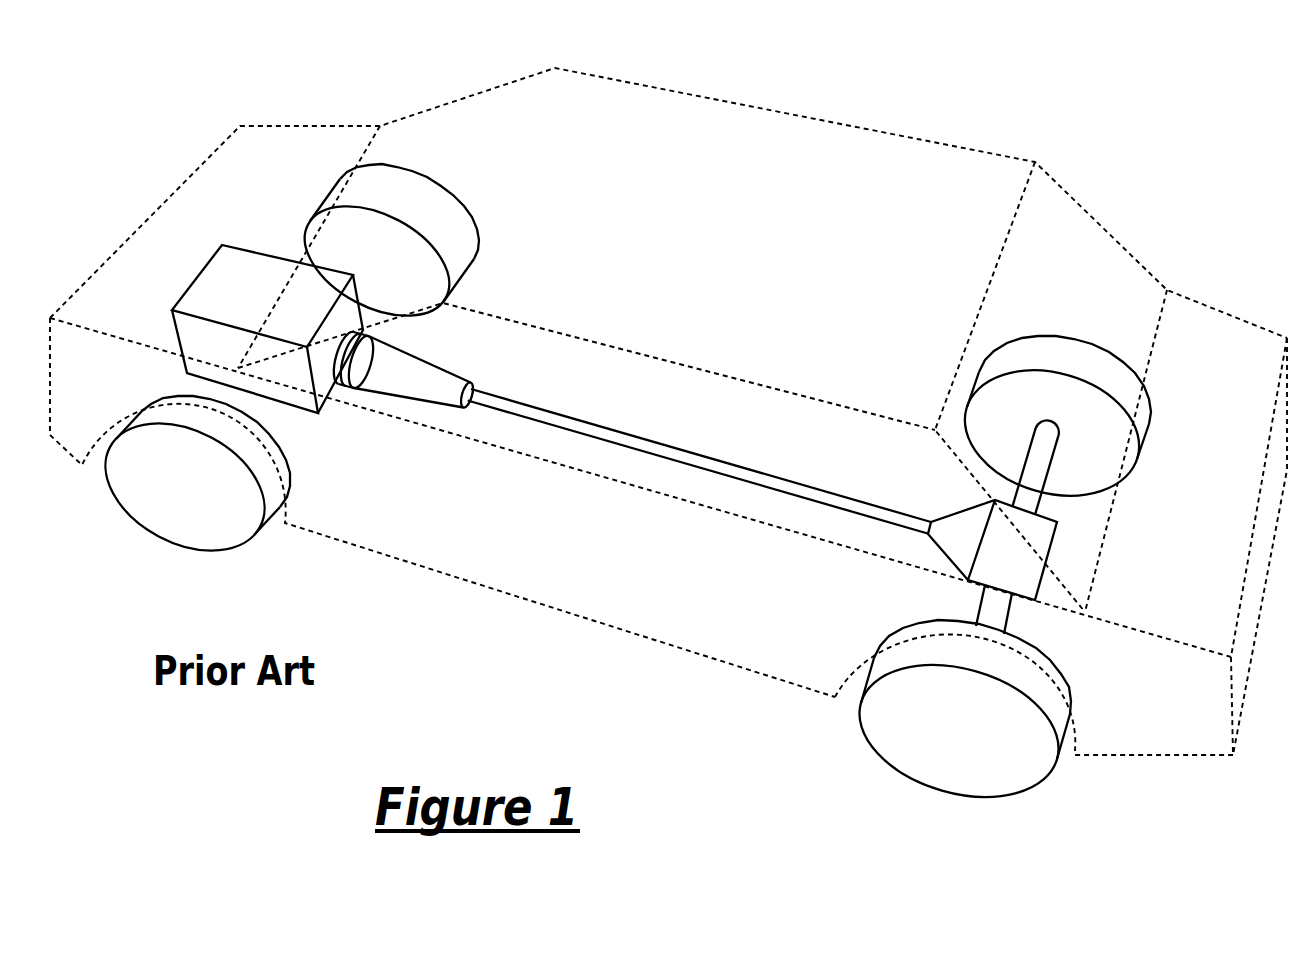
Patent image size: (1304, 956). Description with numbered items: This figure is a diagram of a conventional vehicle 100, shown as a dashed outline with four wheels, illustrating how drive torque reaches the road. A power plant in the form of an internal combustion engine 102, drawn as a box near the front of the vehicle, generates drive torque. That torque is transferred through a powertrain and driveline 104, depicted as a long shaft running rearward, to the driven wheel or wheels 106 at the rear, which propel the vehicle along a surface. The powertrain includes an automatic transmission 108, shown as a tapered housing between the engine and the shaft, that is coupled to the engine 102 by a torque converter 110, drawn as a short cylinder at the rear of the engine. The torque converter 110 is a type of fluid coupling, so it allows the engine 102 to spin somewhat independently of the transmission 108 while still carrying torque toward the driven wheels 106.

The vehicle 100 is at (880, 118).
The internal combustion engine 102 is at (273, 263).
The driveline 104 is at (704, 429).
The driven wheels 106 is at (1089, 362).
The automatic transmission 108 is at (412, 365).
The torque converter 110 is at (333, 370).